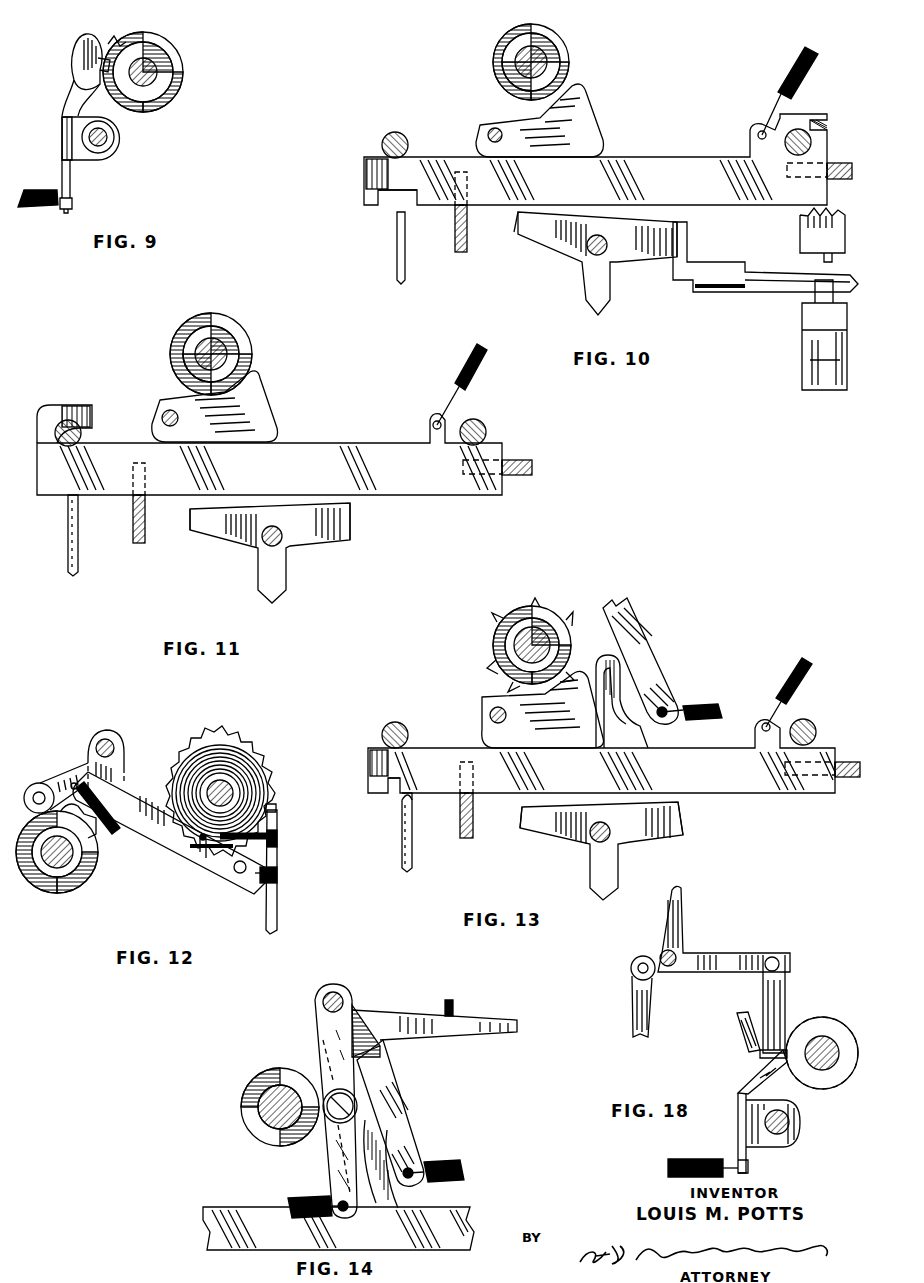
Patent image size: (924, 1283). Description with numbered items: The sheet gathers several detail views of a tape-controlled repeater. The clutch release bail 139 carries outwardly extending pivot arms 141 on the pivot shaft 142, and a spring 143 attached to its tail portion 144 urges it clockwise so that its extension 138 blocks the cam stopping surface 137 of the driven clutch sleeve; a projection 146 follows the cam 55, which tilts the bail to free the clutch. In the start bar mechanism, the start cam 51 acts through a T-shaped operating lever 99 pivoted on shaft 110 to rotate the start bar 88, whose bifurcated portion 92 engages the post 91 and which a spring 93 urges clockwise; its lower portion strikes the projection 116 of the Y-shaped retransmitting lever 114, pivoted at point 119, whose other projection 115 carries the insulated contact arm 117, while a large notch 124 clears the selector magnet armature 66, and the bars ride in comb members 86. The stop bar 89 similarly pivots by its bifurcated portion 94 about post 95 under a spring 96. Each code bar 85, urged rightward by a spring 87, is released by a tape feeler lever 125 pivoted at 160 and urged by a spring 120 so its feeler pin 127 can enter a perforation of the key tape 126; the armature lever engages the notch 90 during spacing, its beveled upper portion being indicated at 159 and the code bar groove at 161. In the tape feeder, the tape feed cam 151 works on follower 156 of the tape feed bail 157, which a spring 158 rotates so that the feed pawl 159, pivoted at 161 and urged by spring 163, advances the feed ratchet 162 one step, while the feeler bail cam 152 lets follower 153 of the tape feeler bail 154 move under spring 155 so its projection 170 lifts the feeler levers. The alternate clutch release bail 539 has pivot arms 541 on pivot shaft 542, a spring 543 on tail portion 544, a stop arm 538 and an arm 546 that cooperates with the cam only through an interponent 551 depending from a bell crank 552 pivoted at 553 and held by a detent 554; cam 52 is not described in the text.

In FIG. 10, the start cam 51 is at (566, 54).
In FIG. 11, the ratchet wheel 52 is at (240, 330).
In FIG. 9, the cam 55 is at (115, 42).
In FIG. 18, the cam 55 is at (826, 1044).
In FIG. 10, the selector magnet armature 66 is at (404, 236).
In FIG. 11, the selector magnet armature 66 is at (80, 540).
In FIG. 13, the code bar 85 is at (762, 780).
In FIG. 10, the comb member 86 is at (842, 182).
In FIG. 11, the comb member 86 is at (520, 464).
In FIG. 13, the comb member 86 is at (846, 760).
In FIG. 13, the spring 87 is at (790, 676).
In FIG. 10, the start bar 88 is at (694, 168).
In FIG. 11, the stop bar 89 is at (340, 456).
In FIG. 13, the notch 90 is at (396, 790).
In FIG. 10, the post 91 is at (815, 140).
In FIG. 11, the post 91 is at (484, 426).
In FIG. 13, the post 91 is at (814, 724).
In FIG. 10, the bifurcated portion 92 is at (798, 118).
In FIG. 10, the spring 93 is at (780, 84).
In FIG. 11, the bifurcated portion 94 is at (72, 404).
In FIG. 10, the post 95 is at (392, 136).
In FIG. 11, the post 95 is at (82, 430).
In FIG. 13, the post 95 is at (396, 722).
In FIG. 11, the spring 96 is at (468, 390).
In FIG. 10, the T-shaped operating lever 99 is at (590, 116).
In FIG. 11, the T-shaped operating lever 99 is at (268, 392).
In FIG. 13, the T-shaped operating lever 99 is at (572, 664).
In FIG. 10, the shaft 110 is at (492, 128).
In FIG. 11, the shaft 110 is at (170, 410).
In FIG. 13, the shaft 110 is at (494, 710).
In FIG. 10, the Y-shaped retransmitting lever 114 is at (556, 250).
In FIG. 11, the Y-shaped retransmitting lever 114 is at (228, 540).
In FIG. 13, the Y-shaped retransmitting lever 114 is at (566, 846).
In FIG. 10, the laterally extending projection 115 is at (674, 258).
In FIG. 11, the laterally extending projection 115 is at (352, 542).
In FIG. 13, the laterally extending projection 115 is at (684, 832).
In FIG. 10, the laterally extending projection 116 is at (516, 234).
In FIG. 11, the laterally extending projection 116 is at (190, 540).
In FIG. 13, the laterally extending projection 116 is at (528, 834).
In FIG. 10, the insulated contact arm 117 is at (748, 276).
In FIG. 10, the pivot point 119 is at (606, 256).
In FIG. 13, the pivot point 119 is at (616, 842).
In FIG. 13, the spring 120 is at (690, 706).
In FIG. 14, the spring 120 is at (456, 1162).
In FIG. 10, the notch 124 is at (390, 200).
In FIG. 13, the tape feeler lever 125 is at (638, 632).
In FIG. 14, the tape feeler lever 125 is at (398, 1142).
In FIG. 14, the key tape 126 is at (338, 1228).
In FIG. 14, the feeler pin 127 is at (460, 1011).
In FIG. 9, the cam stopping surface 137 is at (148, 40).
In FIG. 9, the extension 138 is at (78, 92).
In FIG. 9, the clutch release bail 139 is at (55, 140).
In FIG. 9, the pivot arm 141 is at (106, 154).
In FIG. 9, the pivot shaft 142 is at (108, 132).
In FIG. 9, the spring 143 is at (52, 210).
In FIG. 9, the tail portion 144 is at (70, 184).
In FIG. 9, the projection 146 is at (82, 50).
In FIG. 12, the tape feed cam 151 is at (80, 876).
In FIG. 14, the feeler bail cam 152 is at (272, 1068).
In FIG. 14, the follower 153 is at (352, 1086).
In FIG. 14, the tape feeler bail 154 is at (362, 1010).
In FIG. 14, the spring 155 is at (310, 1198).
In FIG. 12, the follower 156 is at (40, 786).
In FIG. 12, the tape feed bail 157 is at (102, 730).
In FIG. 12, the spring 158 is at (122, 826).
In FIG. 12, the feed pawl 159 is at (282, 846).
In FIG. 13, the feed pawl 159 is at (414, 828).
In FIG. 12, the pivot 160 is at (94, 746).
In FIG. 14, the pivot 160 is at (334, 990).
In FIG. 12, the pivot 161 is at (236, 886).
In FIG. 13, the pivot 161 is at (414, 798).
In FIG. 12, the feed ratchet 162 is at (252, 770).
In FIG. 12, the spring 163 is at (279, 798).
In FIG. 14, the projection 170 is at (382, 1052).
In FIG. 18, the upwardly extending arm 538 is at (742, 1070).
In FIG. 18, the clutch release bail 539 is at (728, 1116).
In FIG. 18, the pivot arm 541 is at (804, 1124).
In FIG. 18, the pivot shaft 542 is at (790, 1116).
In FIG. 18, the spring 543 is at (696, 1160).
In FIG. 18, the tail portion 544 is at (748, 1160).
In FIG. 18, the arm 546 is at (742, 1036).
In FIG. 18, the interponent 551 is at (786, 1012).
In FIG. 18, the bell crank 552 is at (710, 956).
In FIG. 18, the pivot 553 is at (660, 952).
In FIG. 18, the detent 554 is at (636, 980).